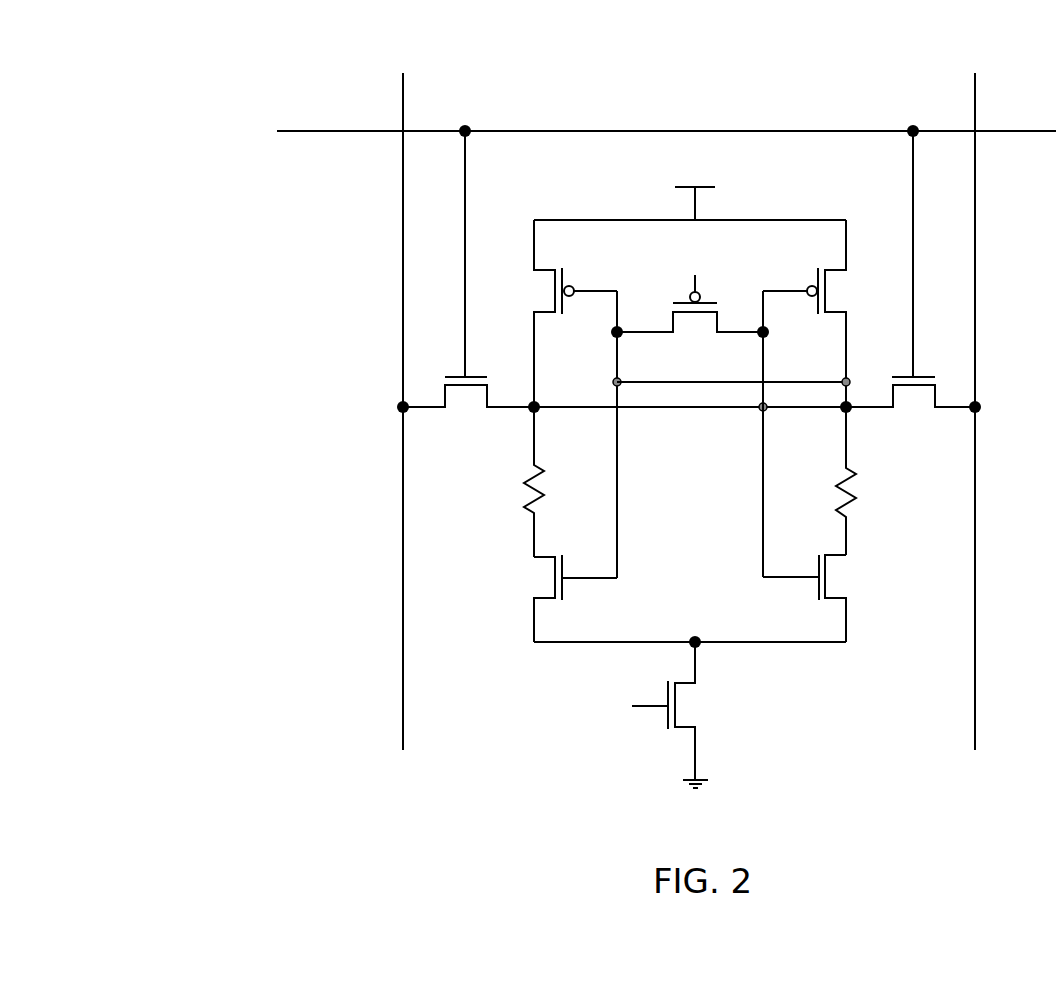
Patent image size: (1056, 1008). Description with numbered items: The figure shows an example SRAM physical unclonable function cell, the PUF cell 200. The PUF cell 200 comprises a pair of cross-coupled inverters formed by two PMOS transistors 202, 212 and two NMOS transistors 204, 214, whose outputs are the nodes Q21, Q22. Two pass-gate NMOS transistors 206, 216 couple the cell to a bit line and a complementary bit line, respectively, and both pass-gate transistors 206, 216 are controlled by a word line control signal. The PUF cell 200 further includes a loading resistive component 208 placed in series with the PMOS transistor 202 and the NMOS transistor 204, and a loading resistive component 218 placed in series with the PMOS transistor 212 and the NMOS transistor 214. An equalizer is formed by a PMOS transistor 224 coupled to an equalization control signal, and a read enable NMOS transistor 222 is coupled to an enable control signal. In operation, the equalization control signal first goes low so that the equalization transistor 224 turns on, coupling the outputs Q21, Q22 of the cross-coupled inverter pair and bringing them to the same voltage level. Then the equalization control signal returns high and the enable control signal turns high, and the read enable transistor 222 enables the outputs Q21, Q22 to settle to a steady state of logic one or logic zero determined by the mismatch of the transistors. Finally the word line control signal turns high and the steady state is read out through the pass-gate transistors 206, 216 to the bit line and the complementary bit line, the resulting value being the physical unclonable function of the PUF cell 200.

The PUF cell 200 is at (242, 68).
The PMOS transistor 202 is at (532, 296).
The NMOS transistor 204 is at (530, 587).
The pass-gate NMOS transistor 206 is at (463, 411).
The loading resistive component 208 is at (520, 490).
The PMOS transistor 212 is at (851, 298).
The NMOS transistor 214 is at (850, 577).
The pass-gate NMOS transistor 216 is at (914, 411).
The loading resistive component 218 is at (860, 478).
The read enable NMOS transistor 222 is at (700, 695).
The equalization transistor 224 is at (701, 339).
The output of the cross-coupled inverter pair Q21 is at (608, 336).
The output of the cross-coupled inverter pair Q22 is at (773, 334).